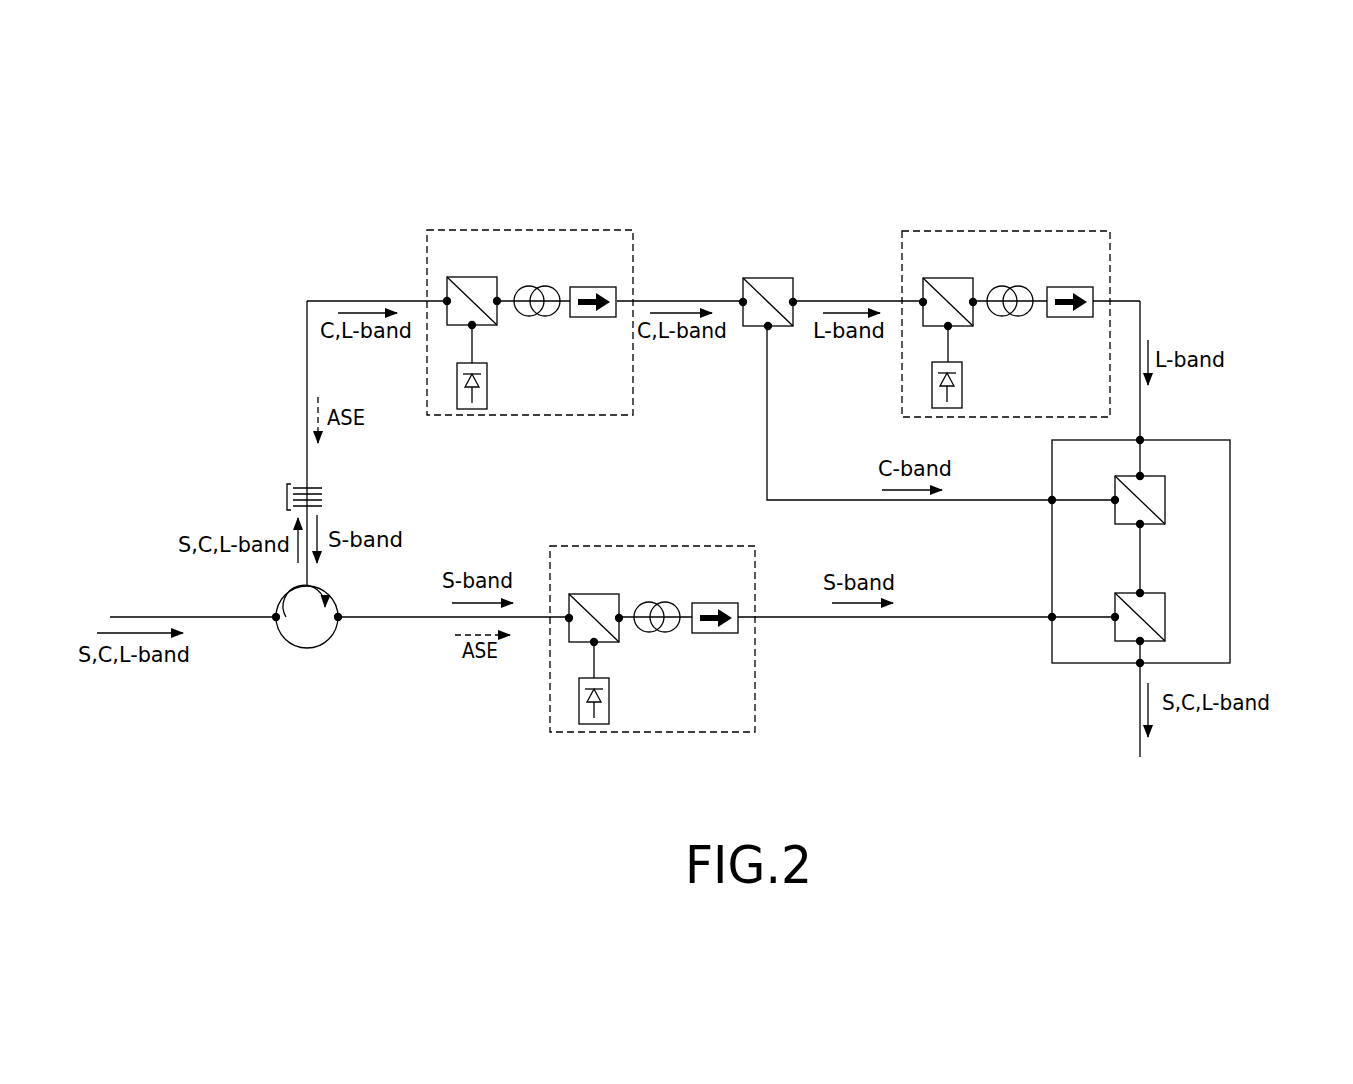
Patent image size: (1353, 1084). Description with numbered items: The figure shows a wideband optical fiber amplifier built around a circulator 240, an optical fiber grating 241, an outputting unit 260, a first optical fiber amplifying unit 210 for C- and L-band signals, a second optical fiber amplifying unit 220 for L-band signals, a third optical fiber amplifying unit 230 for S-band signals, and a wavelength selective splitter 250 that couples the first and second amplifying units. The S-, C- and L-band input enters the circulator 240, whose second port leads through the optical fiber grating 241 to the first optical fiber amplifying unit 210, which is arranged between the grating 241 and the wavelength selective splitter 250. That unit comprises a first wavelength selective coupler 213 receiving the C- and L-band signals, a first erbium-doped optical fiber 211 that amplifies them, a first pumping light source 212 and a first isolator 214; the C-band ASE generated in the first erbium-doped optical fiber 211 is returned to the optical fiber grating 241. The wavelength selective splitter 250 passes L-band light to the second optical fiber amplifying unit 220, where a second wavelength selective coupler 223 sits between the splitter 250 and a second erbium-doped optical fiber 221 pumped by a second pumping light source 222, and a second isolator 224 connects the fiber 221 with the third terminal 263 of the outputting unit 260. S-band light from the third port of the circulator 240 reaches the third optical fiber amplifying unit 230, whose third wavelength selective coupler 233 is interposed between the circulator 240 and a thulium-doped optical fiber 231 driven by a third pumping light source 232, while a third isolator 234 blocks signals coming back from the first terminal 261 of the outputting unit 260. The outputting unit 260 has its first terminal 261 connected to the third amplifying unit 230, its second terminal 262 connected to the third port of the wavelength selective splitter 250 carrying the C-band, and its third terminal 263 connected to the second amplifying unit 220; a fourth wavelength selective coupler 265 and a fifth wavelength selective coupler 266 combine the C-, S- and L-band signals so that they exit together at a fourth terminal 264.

The first optical fiber amplifying unit 210 is at (522, 212).
The first erbium-doped optical fiber 211 is at (537, 316).
The first pumping light source 212 is at (487, 385).
The first wavelength selective coupler 213 is at (470, 277).
The first isolator 214 is at (593, 287).
The second optical fiber amplifying unit 220 is at (997, 212).
The second erbium-doped optical fiber 221 is at (1010, 316).
The second pumping light source 222 is at (963, 385).
The second wavelength selective coupler 223 is at (947, 278).
The second isolator 224 is at (1070, 287).
The third optical fiber amplifying unit 230 is at (645, 527).
The thulium-doped optical fiber 231 is at (657, 632).
The third pumping light source 232 is at (608, 700).
The third wavelength selective coupler 233 is at (593, 594).
The third isolator 234 is at (715, 603).
The circulator 240 is at (307, 648).
The optical fiber grating 241 is at (283, 498).
The wavelength selective splitter 250 is at (765, 250).
The outputting unit 260 is at (1237, 475).
The first terminal 261 is at (1052, 617).
The second terminal 262 is at (1052, 500).
The third terminal 263 is at (1140, 440).
The fourth terminal 264 is at (1140, 663).
The fourth wavelength selective coupler 265 is at (1165, 498).
The fifth wavelength selective coupler 266 is at (1165, 612).